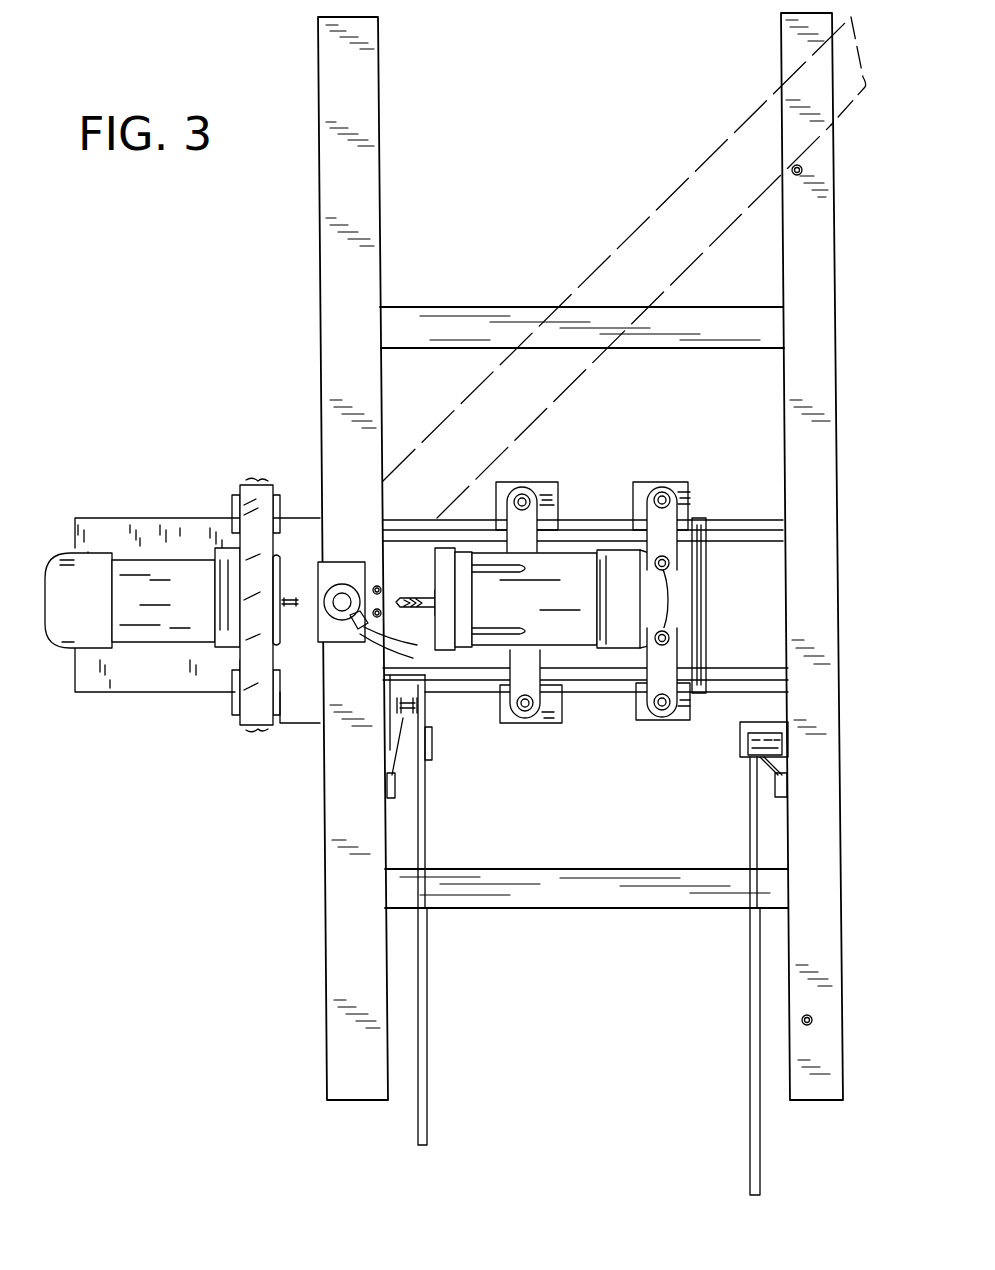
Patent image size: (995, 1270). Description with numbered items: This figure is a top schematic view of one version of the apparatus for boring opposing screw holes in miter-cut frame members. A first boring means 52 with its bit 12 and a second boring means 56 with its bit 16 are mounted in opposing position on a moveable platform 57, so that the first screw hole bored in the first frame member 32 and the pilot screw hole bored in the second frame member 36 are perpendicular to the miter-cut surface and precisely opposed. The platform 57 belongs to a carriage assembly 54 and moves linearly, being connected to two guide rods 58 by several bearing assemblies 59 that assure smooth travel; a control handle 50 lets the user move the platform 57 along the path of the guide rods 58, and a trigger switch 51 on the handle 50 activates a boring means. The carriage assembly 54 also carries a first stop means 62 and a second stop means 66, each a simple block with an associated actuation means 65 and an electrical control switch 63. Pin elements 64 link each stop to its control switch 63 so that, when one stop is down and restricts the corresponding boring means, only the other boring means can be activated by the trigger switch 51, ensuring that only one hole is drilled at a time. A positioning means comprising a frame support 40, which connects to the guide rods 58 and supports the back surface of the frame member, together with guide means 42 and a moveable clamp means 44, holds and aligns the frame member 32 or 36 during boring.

The bit 12 is at (400, 596).
The bit 16 is at (277, 612).
The first frame member 32 is at (743, 142).
The second frame member 36 is at (624, 267).
The frame support 40 is at (368, 80).
The guide means 42 is at (803, 168).
The clamp means 44 is at (333, 604).
The control handle 50 is at (250, 497).
The trigger switch 51 is at (278, 588).
The first boring means 52 is at (583, 560).
The carriage assembly 54 is at (730, 735).
The second boring means 56 is at (55, 568).
The moveable platform 57 is at (100, 680).
The guide rods 58 is at (594, 678).
The bearing assemblies 59 is at (512, 688).
The first stop means 62 is at (418, 703).
The electrical control switch 63 is at (385, 784).
The pin element 64 is at (400, 733).
The actuation means 65 is at (427, 995).
The second stop means 66 is at (770, 745).